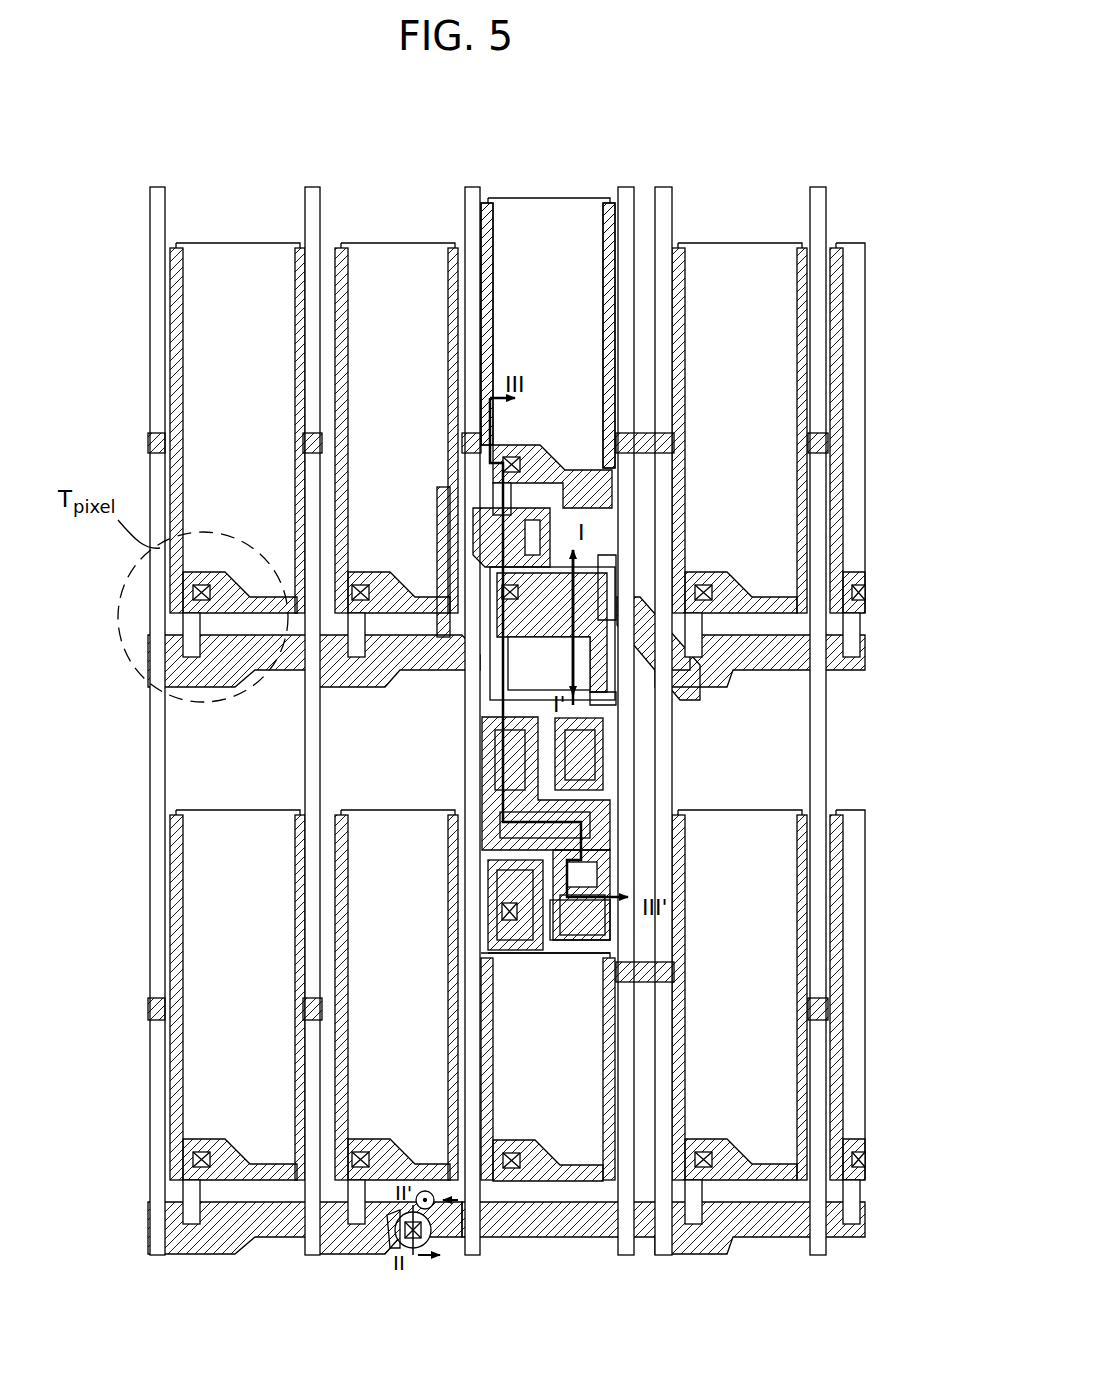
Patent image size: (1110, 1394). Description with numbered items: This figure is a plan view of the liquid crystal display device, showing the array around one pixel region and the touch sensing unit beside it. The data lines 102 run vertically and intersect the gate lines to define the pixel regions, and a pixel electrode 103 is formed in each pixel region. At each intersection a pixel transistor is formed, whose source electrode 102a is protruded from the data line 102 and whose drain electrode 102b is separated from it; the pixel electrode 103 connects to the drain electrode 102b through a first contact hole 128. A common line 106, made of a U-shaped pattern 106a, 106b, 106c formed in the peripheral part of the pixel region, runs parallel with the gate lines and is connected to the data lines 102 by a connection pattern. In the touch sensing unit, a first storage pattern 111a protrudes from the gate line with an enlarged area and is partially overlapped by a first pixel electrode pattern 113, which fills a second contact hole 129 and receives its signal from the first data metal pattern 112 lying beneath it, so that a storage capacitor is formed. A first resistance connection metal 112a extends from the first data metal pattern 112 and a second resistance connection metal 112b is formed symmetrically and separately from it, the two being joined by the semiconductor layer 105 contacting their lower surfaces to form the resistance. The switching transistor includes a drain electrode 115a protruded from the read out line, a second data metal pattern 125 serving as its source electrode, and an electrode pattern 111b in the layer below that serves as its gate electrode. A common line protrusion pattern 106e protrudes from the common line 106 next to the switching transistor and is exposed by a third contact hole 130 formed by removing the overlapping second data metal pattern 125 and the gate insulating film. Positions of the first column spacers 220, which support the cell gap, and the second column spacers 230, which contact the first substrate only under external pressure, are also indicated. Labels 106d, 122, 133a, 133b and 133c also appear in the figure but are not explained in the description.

The data lines 102 is at (320, 190).
The source electrode 102a is at (590, 510).
The drain electrode 102b is at (505, 500).
The pixel electrode 103 is at (393, 258).
The semiconductor layer 105 is at (500, 818).
The common line 106 is at (600, 128).
The U-shaped pattern 106a is at (600, 235).
The U-shaped pattern 106b is at (488, 260).
The U-shaped pattern 106c is at (515, 460).
The common line bridge 106d is at (640, 445).
The common line protrusion pattern 106e is at (500, 958).
The first storage pattern 111a is at (600, 560).
The electrode pattern 111b is at (605, 860).
The first data metal pattern 112 is at (520, 665).
The first resistance connection metal 112a is at (505, 730).
The second resistance connection metal 112b is at (590, 735).
The first pixel electrode pattern 113 is at (600, 700).
The drain electrode 115a is at (610, 878).
The contact hole 122 is at (430, 1240).
The second data metal pattern 125 is at (620, 925).
The first contact hole 128 is at (530, 465).
The second contact hole 129 is at (500, 590).
The third contact hole 130 is at (500, 903).
The first contact region 133a is at (490, 770).
The second contact region 133b is at (600, 760).
The third contact region 133c is at (495, 870).
The first column spacer 220 is at (395, 1230).
The second column spacer 230 is at (434, 1200).